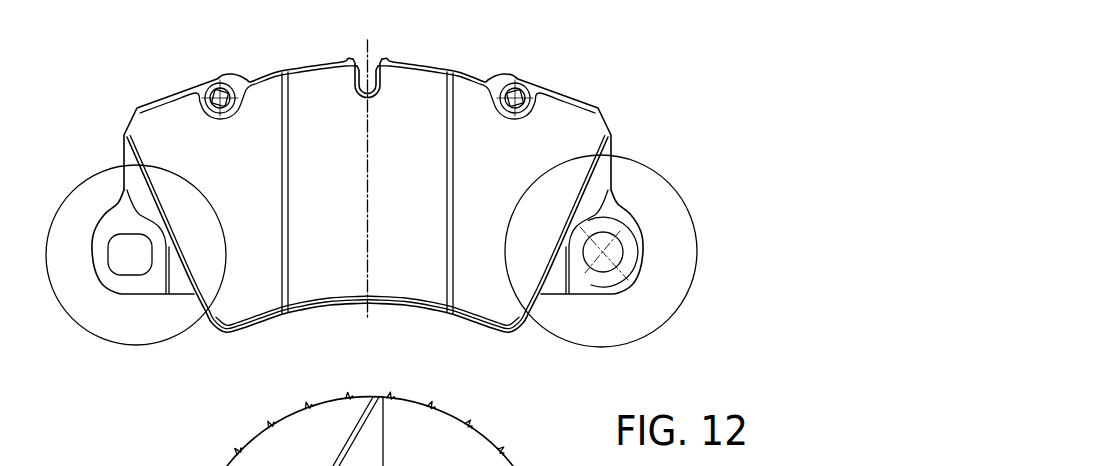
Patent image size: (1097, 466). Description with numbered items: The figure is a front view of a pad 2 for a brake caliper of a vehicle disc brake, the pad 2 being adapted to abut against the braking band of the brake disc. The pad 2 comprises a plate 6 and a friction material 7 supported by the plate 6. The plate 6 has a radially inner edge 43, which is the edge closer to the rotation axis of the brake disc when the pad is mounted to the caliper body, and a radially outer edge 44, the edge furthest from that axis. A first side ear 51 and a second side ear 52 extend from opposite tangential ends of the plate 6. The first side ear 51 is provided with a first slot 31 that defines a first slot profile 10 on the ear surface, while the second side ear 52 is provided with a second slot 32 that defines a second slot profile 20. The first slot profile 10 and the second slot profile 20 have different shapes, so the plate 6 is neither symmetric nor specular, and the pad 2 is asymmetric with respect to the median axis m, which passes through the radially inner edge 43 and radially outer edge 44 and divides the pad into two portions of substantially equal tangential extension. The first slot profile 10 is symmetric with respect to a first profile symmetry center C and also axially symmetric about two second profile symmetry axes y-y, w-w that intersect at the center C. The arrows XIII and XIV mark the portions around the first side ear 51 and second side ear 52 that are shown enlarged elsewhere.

The pad 2 is at (371, 244).
The plate 6 is at (170, 100).
The friction material 7 is at (327, 282).
The first slot profile 10 is at (640, 270).
The second slot profile 20 is at (142, 273).
The first slot 31 is at (599, 277).
The second slot 32 is at (117, 257).
The radially inner edge 43 is at (427, 318).
The radially outer edge 44 is at (455, 73).
The first side ear 51 is at (613, 322).
The second side ear 52 is at (95, 243).
The first profile symmetry center C is at (611, 252).
The median axis m is at (369, 55).
The arrow XIV is at (208, 186).
The arrow XIII is at (663, 164).
The second profile symmetry axis y-y is at (613, 228).
The second profile symmetry axis w-w is at (635, 233).